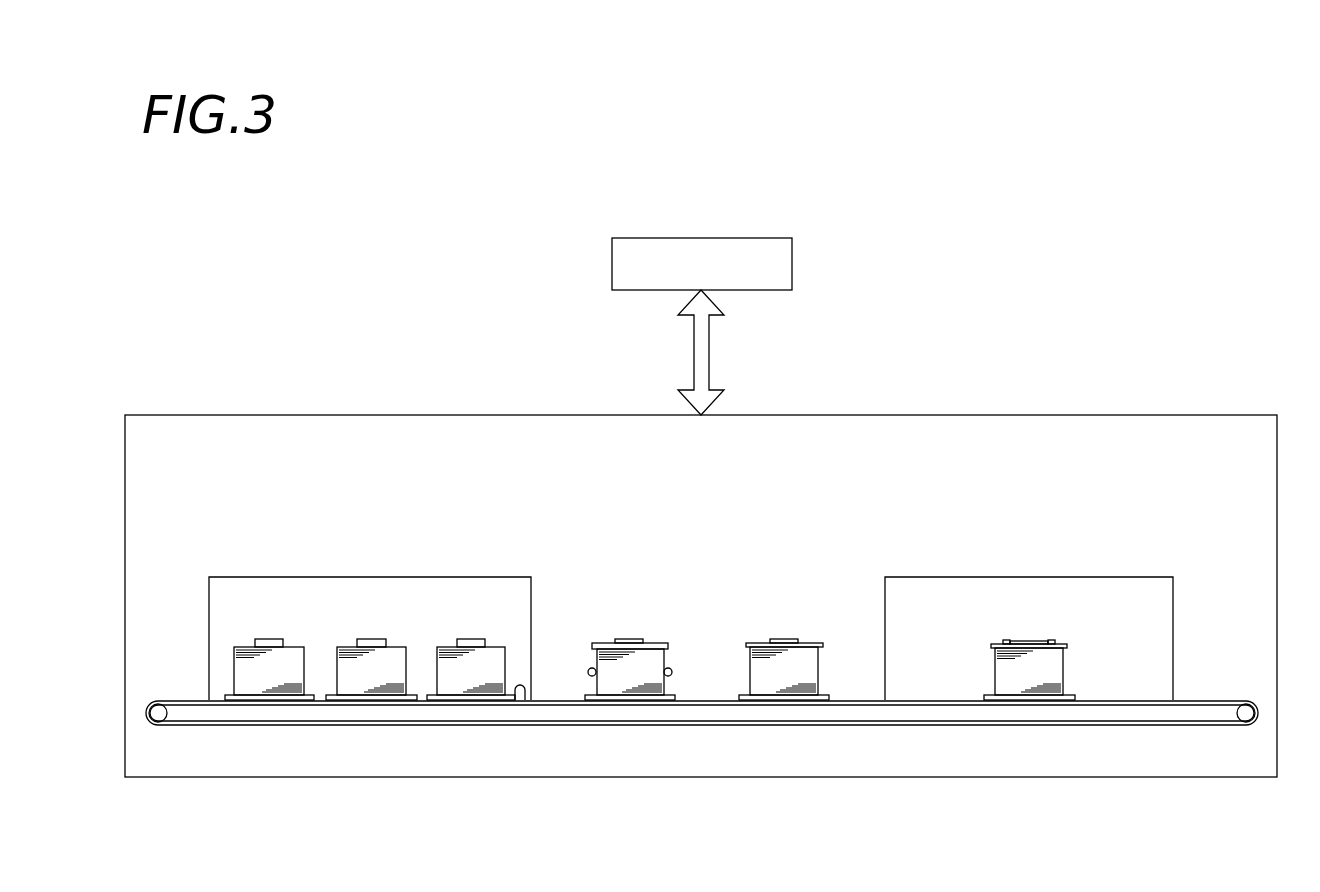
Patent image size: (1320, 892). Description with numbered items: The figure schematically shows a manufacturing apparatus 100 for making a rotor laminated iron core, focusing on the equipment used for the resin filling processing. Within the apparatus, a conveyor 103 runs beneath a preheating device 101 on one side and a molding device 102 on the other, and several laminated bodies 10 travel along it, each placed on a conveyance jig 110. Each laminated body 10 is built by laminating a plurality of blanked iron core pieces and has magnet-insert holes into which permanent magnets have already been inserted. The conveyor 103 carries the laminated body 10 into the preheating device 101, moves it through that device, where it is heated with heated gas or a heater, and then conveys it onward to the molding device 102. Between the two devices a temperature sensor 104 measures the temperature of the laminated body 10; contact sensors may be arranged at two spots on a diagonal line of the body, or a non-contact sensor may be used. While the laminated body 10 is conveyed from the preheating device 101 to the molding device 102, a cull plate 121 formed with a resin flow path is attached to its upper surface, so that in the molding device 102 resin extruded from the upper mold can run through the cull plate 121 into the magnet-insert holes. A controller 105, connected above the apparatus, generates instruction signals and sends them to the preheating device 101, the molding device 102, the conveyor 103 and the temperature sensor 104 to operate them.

The manufacturing apparatus 100 is at (1196, 273).
The controller 105 is at (701, 238).
The preheating device 101 is at (263, 577).
The molding device 102 is at (1029, 606).
The conveyor 103 is at (177, 700).
The conveyance jig 110 is at (522, 700).
The laminated body 10 is at (657, 613).
The temperature sensor 104 is at (588, 672).
The cull plate 121 is at (753, 643).